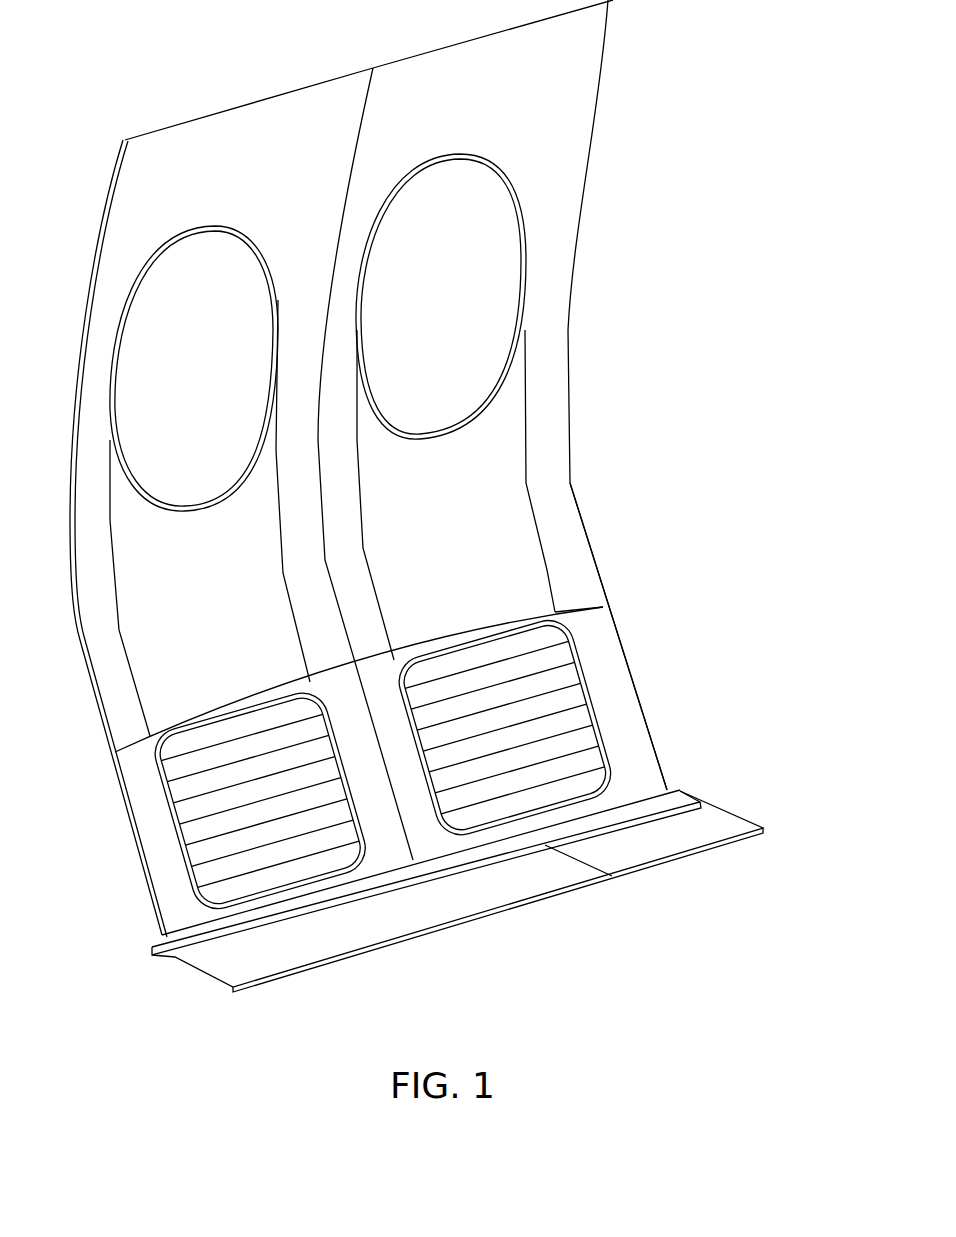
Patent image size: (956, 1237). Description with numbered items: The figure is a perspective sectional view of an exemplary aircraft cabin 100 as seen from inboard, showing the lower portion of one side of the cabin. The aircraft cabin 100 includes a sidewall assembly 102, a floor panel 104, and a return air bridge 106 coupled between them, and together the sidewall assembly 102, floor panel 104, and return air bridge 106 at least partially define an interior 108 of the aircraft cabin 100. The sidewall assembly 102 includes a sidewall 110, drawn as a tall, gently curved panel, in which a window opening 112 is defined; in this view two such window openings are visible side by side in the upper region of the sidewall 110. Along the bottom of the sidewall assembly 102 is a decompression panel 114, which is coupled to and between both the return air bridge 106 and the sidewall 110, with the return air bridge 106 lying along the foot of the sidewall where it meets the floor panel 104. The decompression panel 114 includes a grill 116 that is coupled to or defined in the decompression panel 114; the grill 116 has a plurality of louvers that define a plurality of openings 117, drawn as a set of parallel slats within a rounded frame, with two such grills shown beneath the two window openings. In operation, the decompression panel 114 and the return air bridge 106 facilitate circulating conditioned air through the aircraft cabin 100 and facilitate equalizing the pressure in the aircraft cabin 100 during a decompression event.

The aircraft cabin 100 is at (693, 60).
The sidewall assembly 102 is at (632, 504).
The floor panel 104 is at (735, 828).
The return air bridge 106 is at (666, 791).
The interior 108 is at (680, 333).
The sidewall 110 is at (568, 118).
The window opening 112 is at (460, 318).
The decompression panel 114 is at (622, 730).
The grill 116 is at (555, 662).
The openings 117 is at (566, 693).